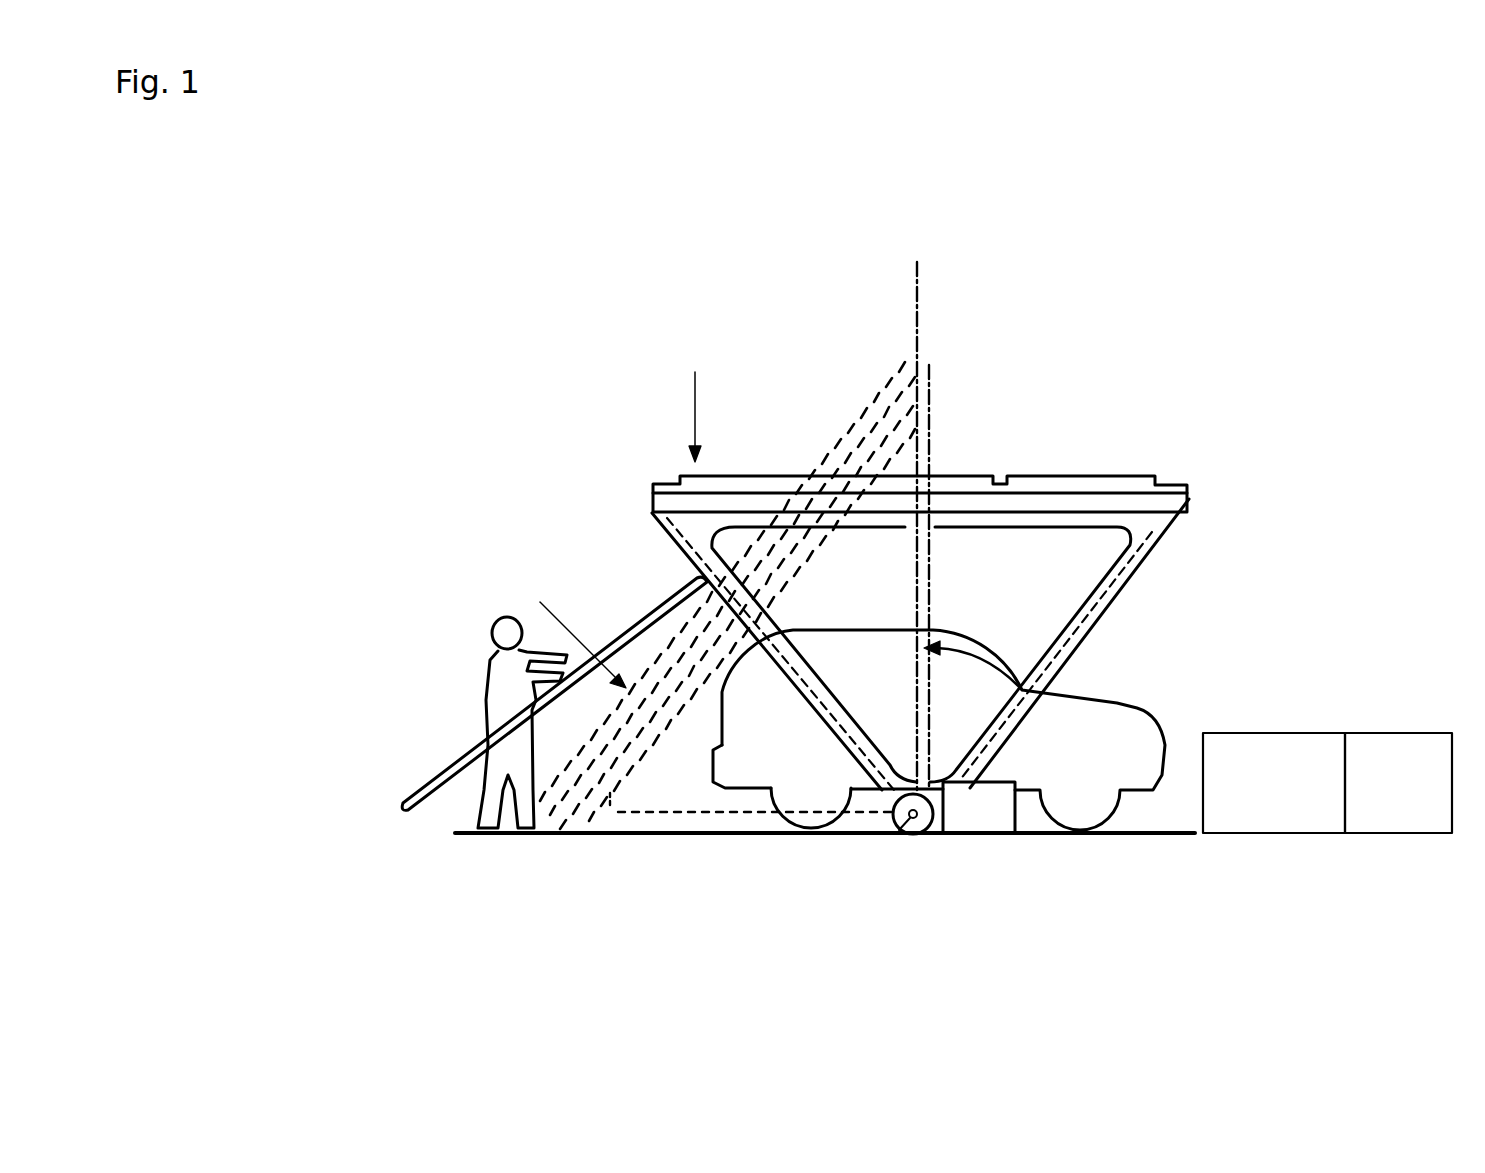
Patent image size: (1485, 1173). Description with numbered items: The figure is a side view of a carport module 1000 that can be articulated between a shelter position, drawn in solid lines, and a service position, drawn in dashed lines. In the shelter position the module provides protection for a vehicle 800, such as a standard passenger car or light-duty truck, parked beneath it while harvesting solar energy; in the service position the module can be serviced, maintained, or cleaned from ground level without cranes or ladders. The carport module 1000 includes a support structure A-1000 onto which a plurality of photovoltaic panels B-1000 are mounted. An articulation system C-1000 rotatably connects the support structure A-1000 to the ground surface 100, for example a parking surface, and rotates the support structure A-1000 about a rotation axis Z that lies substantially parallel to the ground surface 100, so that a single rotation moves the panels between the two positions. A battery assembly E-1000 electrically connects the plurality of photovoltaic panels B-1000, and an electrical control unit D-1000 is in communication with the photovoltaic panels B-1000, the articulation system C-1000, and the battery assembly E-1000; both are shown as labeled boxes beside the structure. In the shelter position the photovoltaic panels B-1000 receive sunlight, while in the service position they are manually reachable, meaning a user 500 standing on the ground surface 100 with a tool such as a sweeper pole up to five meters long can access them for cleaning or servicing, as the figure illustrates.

The carport module 1000 is at (1275, 158).
The ground surface 100 is at (458, 836).
The plurality of photovoltaic panels B-1000 is at (1078, 496).
The support structure A-1000 is at (633, 590).
The user 500 is at (490, 692).
The vehicle 800 is at (1118, 703).
The rotation axis Z is at (910, 838).
The articulation system C-1000 is at (981, 865).
The battery assembly E-1000 is at (1274, 783).
The electrical control unit D-1000 is at (1398, 783).